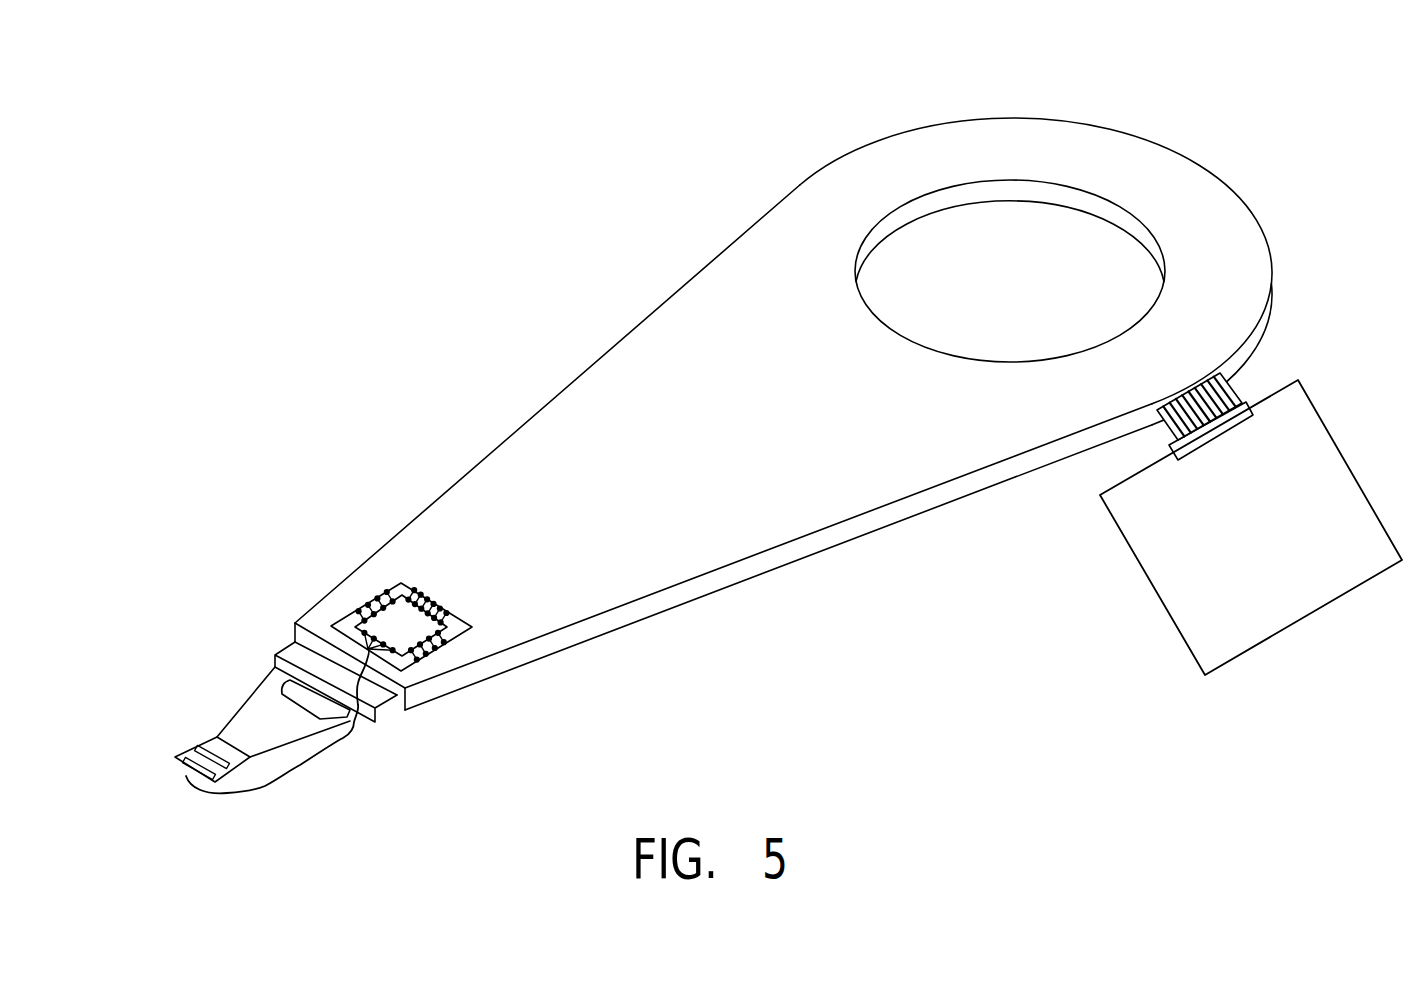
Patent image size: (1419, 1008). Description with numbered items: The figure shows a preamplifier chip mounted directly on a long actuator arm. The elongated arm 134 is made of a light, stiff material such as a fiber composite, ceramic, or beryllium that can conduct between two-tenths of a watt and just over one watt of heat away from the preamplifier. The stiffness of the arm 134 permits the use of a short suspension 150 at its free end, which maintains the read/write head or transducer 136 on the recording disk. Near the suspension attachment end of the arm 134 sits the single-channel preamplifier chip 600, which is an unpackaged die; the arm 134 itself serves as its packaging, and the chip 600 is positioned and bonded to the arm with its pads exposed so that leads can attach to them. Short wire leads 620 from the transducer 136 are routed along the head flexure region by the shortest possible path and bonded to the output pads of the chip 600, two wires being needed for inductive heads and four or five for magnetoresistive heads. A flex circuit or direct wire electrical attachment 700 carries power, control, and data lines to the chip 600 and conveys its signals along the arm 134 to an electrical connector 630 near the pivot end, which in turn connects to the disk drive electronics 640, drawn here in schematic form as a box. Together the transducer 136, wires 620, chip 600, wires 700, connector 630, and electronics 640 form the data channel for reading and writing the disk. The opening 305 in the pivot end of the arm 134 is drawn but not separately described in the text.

The elongated arm 134 is at (659, 350).
The central aperture 305 is at (887, 232).
The electrical connector 630 is at (1237, 380).
The disk drive electronics 640 is at (1188, 618).
The flex circuit or direct wire electrical attachment 700 is at (463, 627).
The preamplifier chip 600 is at (388, 623).
The short suspension 150 is at (255, 718).
The transducer 136 is at (180, 757).
The wire leads 620 is at (313, 760).